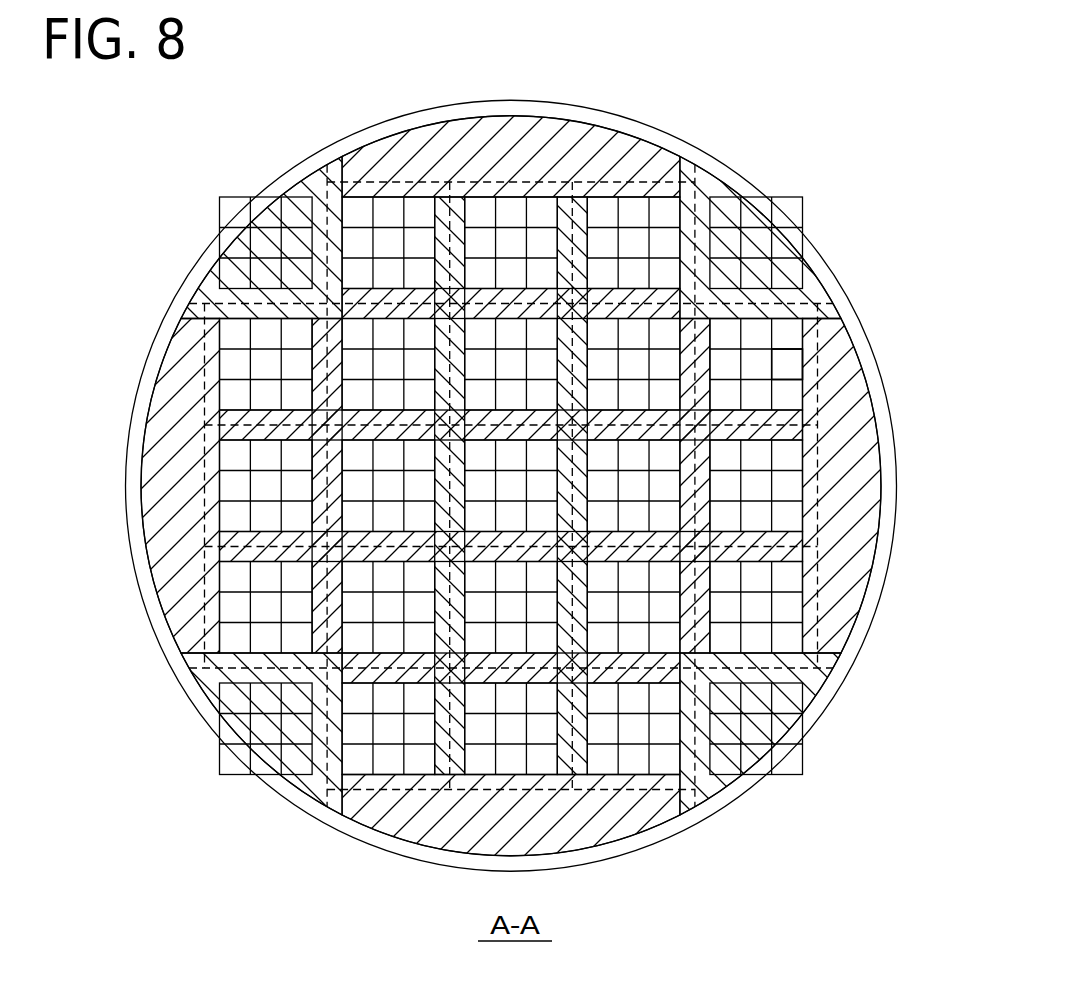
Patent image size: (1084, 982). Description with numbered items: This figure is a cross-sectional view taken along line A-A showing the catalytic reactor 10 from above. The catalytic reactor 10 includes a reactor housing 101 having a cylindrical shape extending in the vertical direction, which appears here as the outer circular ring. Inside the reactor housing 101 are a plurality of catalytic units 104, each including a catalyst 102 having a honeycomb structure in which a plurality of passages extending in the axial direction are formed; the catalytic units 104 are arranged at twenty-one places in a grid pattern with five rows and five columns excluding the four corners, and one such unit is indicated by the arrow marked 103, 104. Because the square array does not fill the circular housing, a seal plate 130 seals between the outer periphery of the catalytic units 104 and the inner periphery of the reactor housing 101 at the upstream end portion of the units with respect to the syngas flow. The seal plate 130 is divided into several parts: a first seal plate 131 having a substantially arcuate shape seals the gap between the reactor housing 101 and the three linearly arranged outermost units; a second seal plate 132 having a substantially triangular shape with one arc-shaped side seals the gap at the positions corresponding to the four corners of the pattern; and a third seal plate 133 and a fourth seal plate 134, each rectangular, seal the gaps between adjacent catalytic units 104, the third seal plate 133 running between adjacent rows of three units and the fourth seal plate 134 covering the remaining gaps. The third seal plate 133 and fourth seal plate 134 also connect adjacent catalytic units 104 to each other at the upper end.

The catalytic reactor 10 is at (745, 135).
The reactor housing 101 is at (207, 258).
The catalyst 102 is at (787, 330).
The cell 103 is at (858, 320).
The catalytic unit 104 is at (793, 367).
The seal plate 130 is at (509, 468).
The first seal plate 131 is at (510, 137).
The second seal plate 132 is at (280, 235).
The third seal plate 133 is at (703, 367).
The fourth seal plate 134 is at (557, 220).